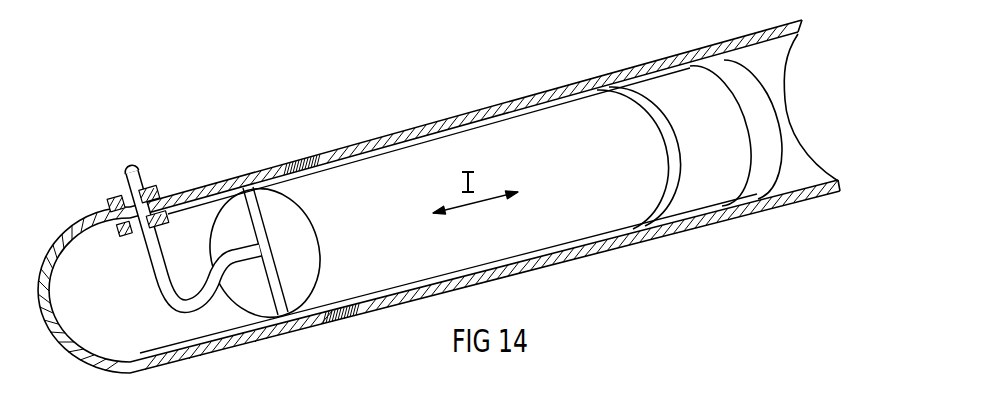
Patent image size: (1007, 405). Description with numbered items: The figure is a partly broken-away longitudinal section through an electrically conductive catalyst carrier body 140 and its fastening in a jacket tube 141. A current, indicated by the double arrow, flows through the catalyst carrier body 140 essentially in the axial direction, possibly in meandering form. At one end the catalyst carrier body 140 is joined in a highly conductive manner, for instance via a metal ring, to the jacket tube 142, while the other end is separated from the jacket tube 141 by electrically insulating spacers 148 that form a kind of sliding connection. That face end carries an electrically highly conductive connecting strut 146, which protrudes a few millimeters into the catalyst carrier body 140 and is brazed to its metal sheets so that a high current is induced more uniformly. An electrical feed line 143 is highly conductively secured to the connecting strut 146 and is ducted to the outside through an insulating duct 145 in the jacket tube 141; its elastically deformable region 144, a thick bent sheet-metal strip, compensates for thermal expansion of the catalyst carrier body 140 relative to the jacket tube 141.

The catalyst carrier body 140 is at (460, 145).
The jacket tube 141 is at (538, 94).
The jacket tube 142 is at (706, 212).
The electrical feed line 143 is at (140, 172).
The elastically deformable region 144 is at (162, 274).
The insulating duct 145 is at (118, 192).
The connecting strut 146 is at (267, 305).
The electrically insulating spacers 148 is at (293, 161).